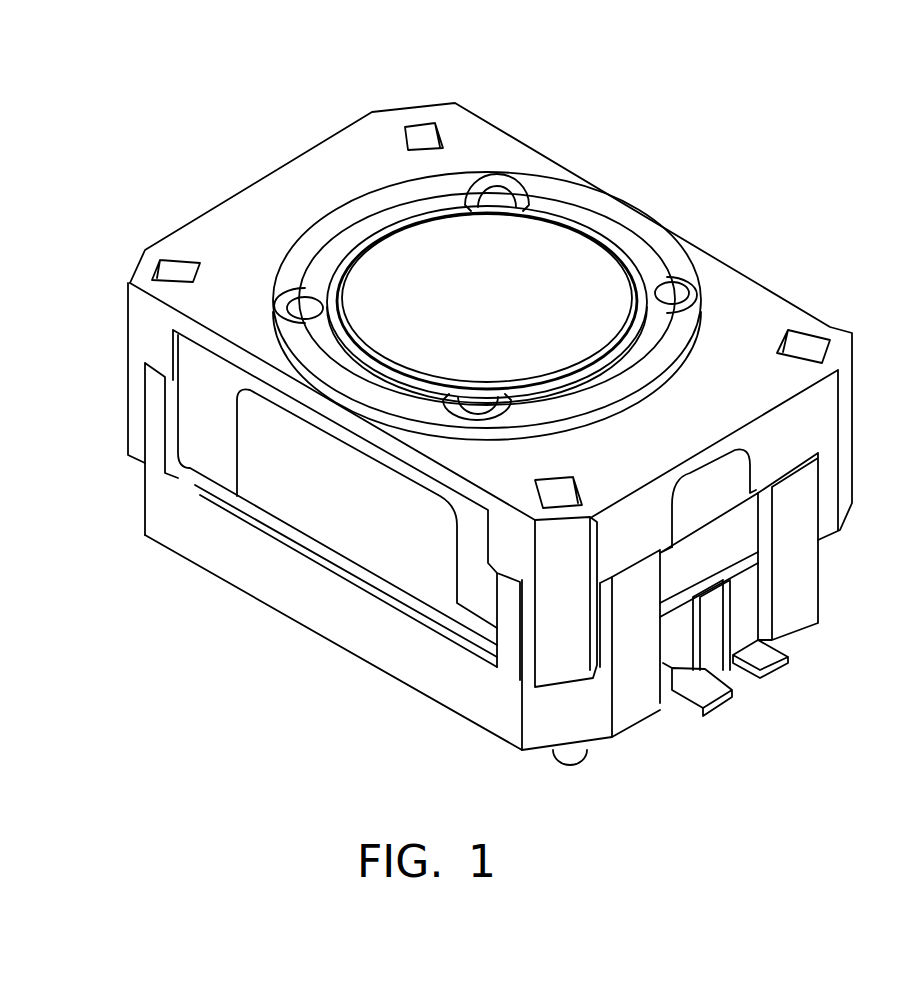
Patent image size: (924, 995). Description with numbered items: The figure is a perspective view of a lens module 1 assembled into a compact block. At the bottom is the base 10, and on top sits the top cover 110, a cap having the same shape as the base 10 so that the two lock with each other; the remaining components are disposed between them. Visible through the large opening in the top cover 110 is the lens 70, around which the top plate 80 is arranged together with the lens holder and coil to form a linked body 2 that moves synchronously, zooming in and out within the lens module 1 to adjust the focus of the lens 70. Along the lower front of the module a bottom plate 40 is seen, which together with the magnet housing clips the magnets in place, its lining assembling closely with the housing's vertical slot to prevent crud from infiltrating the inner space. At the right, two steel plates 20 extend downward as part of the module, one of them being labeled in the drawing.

The lens module 1 is at (560, 114).
The linked body 2 is at (588, 279).
The lens 70 is at (533, 282).
The top plate 80 is at (668, 296).
The top cover 110 is at (760, 302).
The bottom plate 40 is at (317, 502).
The base 10 is at (388, 652).
The steel plate 20 is at (763, 657).